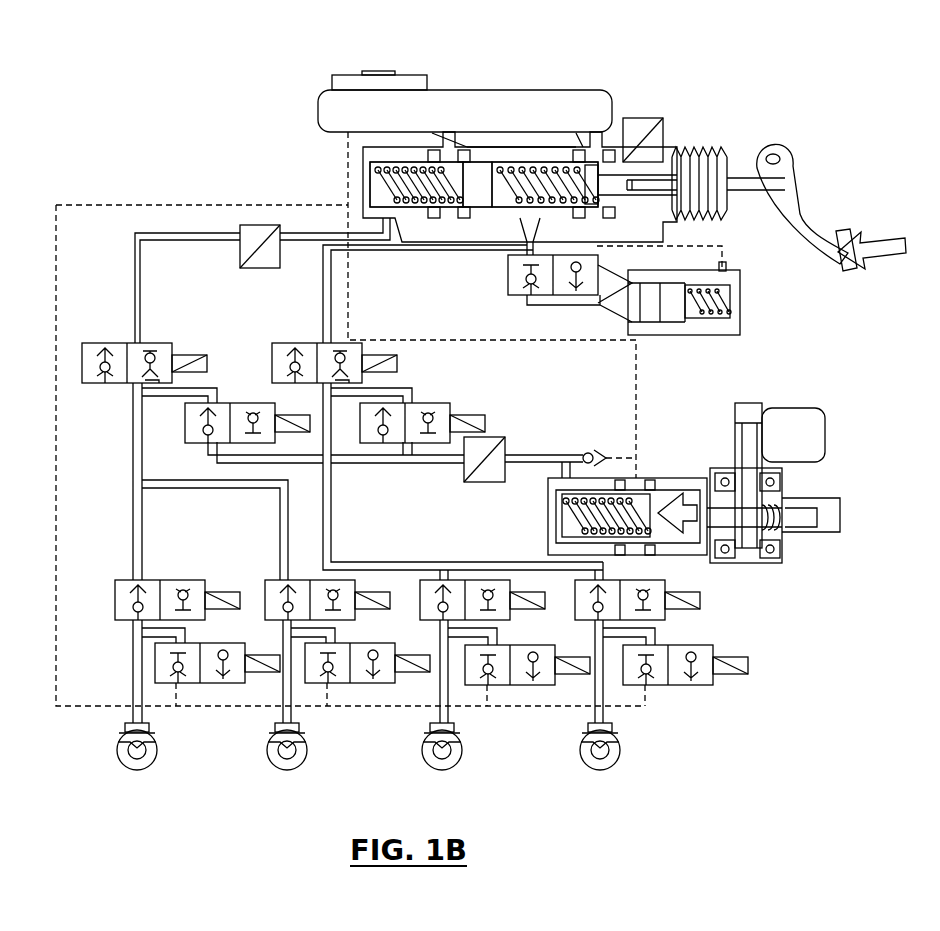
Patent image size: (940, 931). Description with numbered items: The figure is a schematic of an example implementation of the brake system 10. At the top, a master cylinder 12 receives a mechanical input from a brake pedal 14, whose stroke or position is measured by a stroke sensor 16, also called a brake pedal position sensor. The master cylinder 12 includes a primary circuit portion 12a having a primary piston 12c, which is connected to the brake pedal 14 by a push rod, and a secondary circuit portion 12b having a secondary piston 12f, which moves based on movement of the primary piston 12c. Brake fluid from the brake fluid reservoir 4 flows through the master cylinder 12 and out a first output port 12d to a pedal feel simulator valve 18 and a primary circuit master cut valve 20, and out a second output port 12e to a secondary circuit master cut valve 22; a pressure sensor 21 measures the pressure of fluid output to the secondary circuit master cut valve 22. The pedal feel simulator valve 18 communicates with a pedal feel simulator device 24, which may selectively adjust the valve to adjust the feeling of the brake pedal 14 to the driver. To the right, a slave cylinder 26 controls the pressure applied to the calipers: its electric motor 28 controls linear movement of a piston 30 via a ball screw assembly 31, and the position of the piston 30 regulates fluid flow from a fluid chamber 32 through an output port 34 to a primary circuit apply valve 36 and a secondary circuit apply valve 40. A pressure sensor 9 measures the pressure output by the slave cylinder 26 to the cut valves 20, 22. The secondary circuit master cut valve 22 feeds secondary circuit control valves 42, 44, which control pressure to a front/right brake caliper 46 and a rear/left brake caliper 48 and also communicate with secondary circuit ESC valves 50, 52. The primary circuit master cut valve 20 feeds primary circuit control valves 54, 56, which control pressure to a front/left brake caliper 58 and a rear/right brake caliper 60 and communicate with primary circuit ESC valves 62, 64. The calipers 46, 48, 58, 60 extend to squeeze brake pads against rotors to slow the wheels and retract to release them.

The brake system 10 is at (126, 54).
The brake fluid reservoir 4 is at (592, 90).
The master cylinder 12 is at (469, 188).
The primary circuit portion 12a is at (530, 168).
The secondary circuit portion 12b is at (378, 193).
The primary piston 12c is at (593, 167).
The first output port 12d is at (532, 244).
The second output port 12e is at (392, 229).
The secondary piston 12f is at (478, 185).
The stroke sensor 16 is at (645, 118).
The brake pedal 14 is at (796, 220).
The pressure sensor 21 is at (248, 225).
The pedal feel simulator valve 18 is at (508, 258).
The pedal feel simulator device 24 is at (718, 333).
The secondary circuit master cut valve 22 is at (152, 345).
The primary circuit master cut valve 20 is at (301, 345).
The secondary circuit apply valve 40 is at (213, 403).
The primary circuit apply valve 36 is at (433, 403).
The pressure sensor 9 is at (490, 437).
The output port 34 is at (562, 485).
The piston 30 is at (638, 493).
The fluid chamber 32 is at (568, 536).
The electric motor 28 is at (818, 432).
The ball screw assembly 31 is at (782, 492).
The slave cylinder 26 is at (797, 486).
The primary circuit control valve 56 is at (664, 584).
The secondary circuit control valve 42 is at (148, 580).
The secondary circuit control valve 44 is at (275, 580).
The primary circuit control valve 54 is at (505, 614).
The secondary circuit electronic stability control valve 50 is at (192, 643).
The secondary circuit electronic stability control valve 52 is at (356, 645).
The primary circuit electronic stability control valve 62 is at (498, 688).
The primary circuit electronic stability control valve 64 is at (708, 645).
The front/right brake caliper 46 is at (120, 735).
The rear/left brake caliper 48 is at (270, 735).
The front/left brake caliper 58 is at (425, 735).
The rear/right brake caliper 60 is at (583, 735).